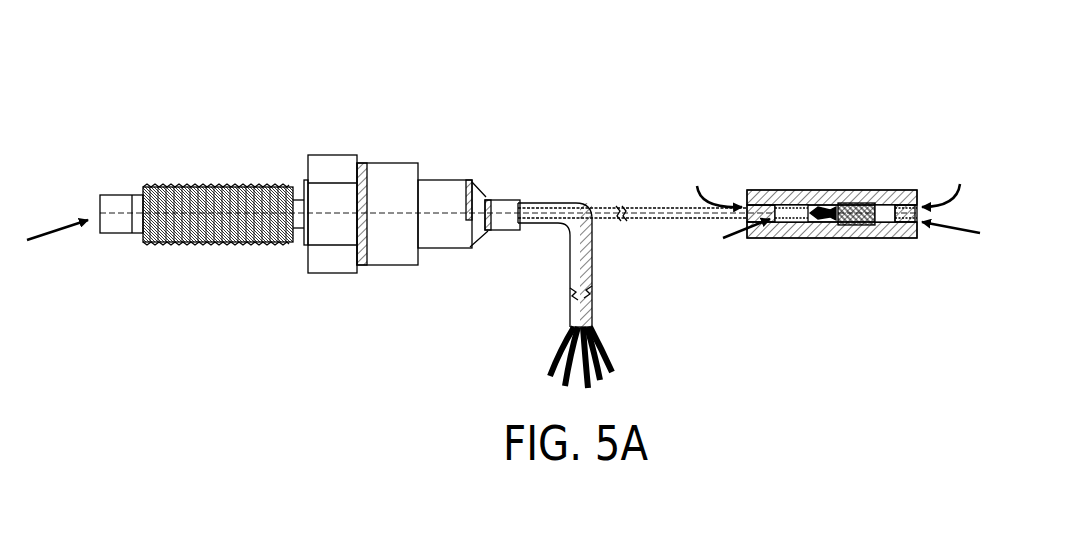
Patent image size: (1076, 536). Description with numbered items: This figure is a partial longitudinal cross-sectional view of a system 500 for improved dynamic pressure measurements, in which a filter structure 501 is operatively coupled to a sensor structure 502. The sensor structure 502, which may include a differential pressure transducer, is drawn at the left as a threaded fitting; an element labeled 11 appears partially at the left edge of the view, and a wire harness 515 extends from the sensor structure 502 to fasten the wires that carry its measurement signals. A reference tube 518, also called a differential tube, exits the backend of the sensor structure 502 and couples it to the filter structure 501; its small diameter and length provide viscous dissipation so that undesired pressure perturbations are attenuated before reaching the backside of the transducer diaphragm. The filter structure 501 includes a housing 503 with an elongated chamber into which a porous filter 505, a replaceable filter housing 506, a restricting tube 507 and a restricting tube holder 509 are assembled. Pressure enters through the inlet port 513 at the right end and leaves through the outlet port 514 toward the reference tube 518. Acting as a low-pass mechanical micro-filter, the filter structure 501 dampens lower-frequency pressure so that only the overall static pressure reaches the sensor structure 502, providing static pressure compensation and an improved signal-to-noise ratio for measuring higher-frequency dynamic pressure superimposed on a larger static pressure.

The system 500 is at (603, 56).
The pipe/line 11 is at (71, 178).
The sensor structure 502 is at (187, 189).
The reference tube 518 is at (652, 207).
The wire harness 515 is at (566, 310).
The filter structure 501 is at (823, 298).
The housing 503 is at (747, 190).
The filter housing 506 is at (838, 228).
The restricting tube 507 is at (812, 203).
The restricting tube holder 509 is at (826, 203).
The porous filter 505 is at (873, 193).
The outlet port 514 is at (701, 184).
The inlet port 513 is at (958, 181).